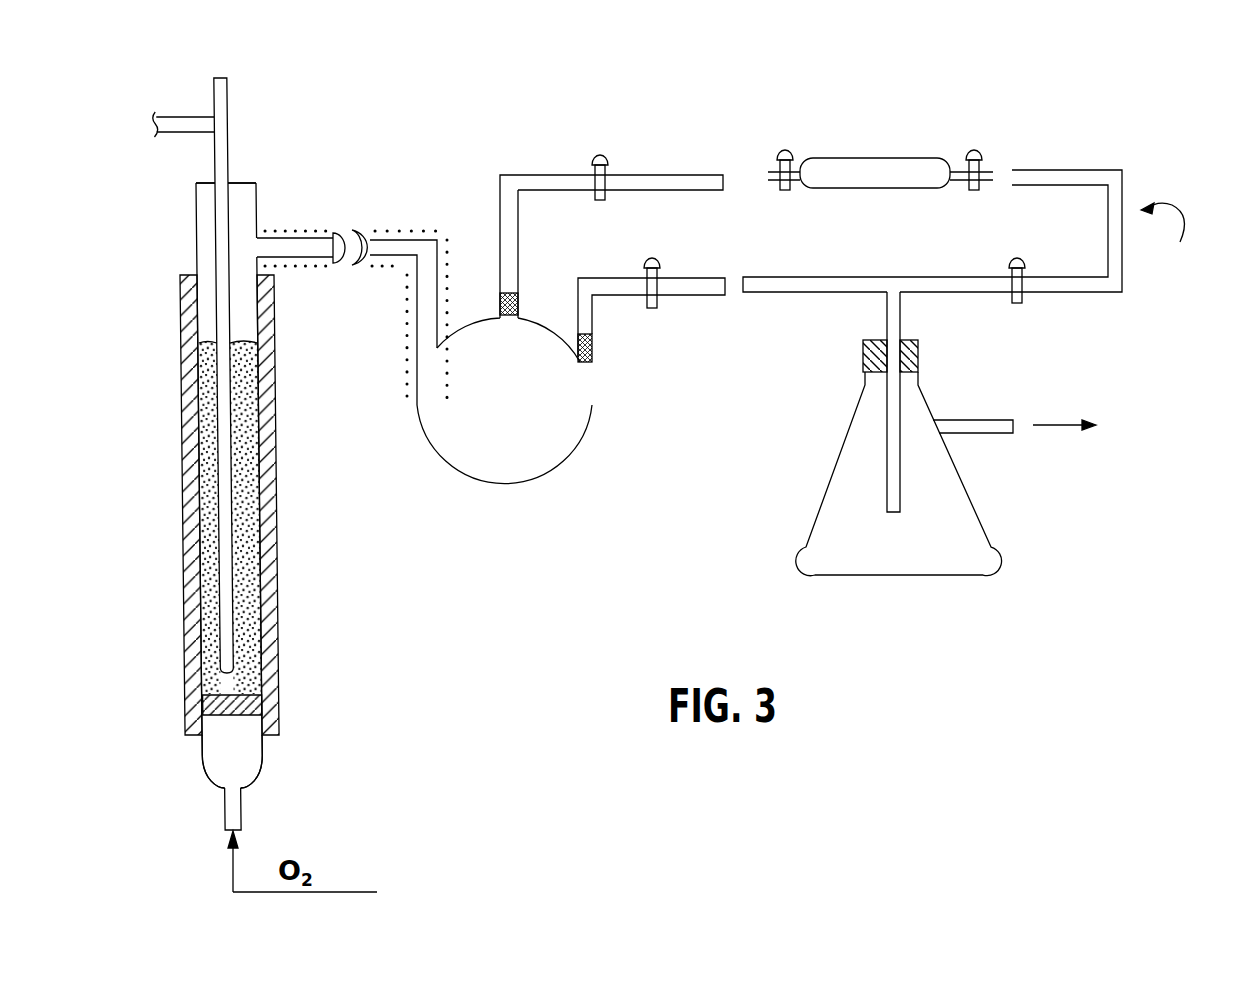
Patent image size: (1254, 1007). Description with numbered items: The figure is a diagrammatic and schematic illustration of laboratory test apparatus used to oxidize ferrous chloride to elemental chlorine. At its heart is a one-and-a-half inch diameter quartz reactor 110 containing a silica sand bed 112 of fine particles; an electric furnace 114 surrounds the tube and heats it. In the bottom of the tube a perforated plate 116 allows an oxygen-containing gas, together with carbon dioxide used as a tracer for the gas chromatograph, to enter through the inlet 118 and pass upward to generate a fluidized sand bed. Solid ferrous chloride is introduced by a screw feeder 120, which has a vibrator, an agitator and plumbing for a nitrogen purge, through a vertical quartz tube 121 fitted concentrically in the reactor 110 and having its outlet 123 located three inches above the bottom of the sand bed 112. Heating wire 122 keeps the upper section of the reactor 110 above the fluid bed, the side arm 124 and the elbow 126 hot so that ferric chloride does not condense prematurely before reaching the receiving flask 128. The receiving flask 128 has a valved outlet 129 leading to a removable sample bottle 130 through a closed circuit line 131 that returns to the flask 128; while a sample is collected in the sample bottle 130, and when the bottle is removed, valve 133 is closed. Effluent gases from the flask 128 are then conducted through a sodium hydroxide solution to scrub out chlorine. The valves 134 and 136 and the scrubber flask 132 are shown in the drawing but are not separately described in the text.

The quartz reactor 110 is at (196, 226).
The sand bed 112 is at (268, 544).
The electric furnace 114 is at (274, 411).
The perforated plate 116 is at (253, 716).
The inlet 118 is at (231, 804).
The screw feeder 120 is at (220, 193).
The vertical quartz tube 121 is at (232, 99).
The heating wire 122 is at (389, 263).
The outlet 123 is at (205, 684).
The side arm 124 is at (295, 252).
The elbow 126 is at (424, 238).
The receiving flask 128 is at (533, 473).
The valved outlet 129 is at (683, 183).
The sample bottle 130 is at (871, 171).
The closed circuit line 131 is at (967, 231).
The scrubber flask 132 is at (958, 509).
The valve 133 is at (659, 272).
The stopcock 134 is at (1023, 270).
The stopcock 136 is at (591, 168).